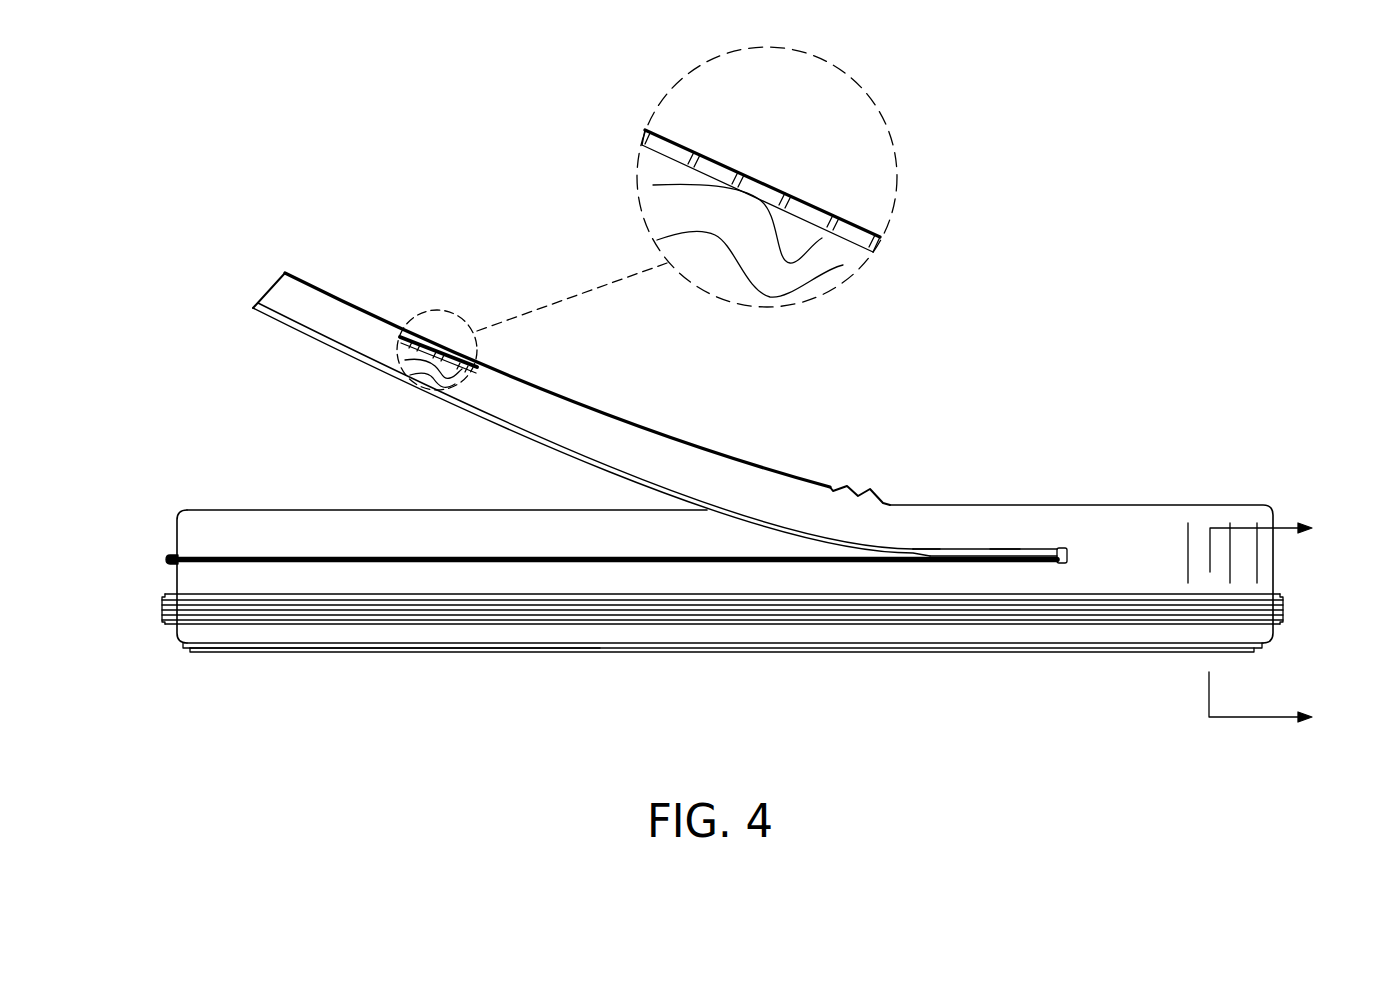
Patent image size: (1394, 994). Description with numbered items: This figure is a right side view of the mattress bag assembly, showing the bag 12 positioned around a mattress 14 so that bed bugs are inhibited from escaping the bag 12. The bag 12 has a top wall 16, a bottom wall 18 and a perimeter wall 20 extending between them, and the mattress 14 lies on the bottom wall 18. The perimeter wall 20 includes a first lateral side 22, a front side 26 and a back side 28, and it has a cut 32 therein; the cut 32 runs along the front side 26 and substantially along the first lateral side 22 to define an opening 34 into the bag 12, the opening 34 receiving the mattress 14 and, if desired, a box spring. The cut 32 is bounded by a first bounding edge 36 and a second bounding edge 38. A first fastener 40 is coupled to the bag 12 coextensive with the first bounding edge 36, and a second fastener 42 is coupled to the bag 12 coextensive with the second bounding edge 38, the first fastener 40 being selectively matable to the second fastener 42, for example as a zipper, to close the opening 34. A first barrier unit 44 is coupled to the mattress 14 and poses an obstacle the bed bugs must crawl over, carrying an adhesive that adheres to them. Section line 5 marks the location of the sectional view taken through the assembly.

The section line 5- 5 is at (1276, 626).
The bag 12 is at (283, 272).
The mattress 14 is at (225, 510).
The top wall 16 is at (623, 426).
The bottom wall 18 is at (432, 642).
The perimeter wall 20 is at (313, 575).
The first lateral side 22 is at (775, 575).
The front side 26 is at (172, 582).
The back side 28 is at (1273, 563).
The cut 32 is at (1003, 560).
The opening 34 is at (373, 460).
The first bounding edge 36 is at (973, 560).
The second bounding edge 38 is at (940, 553).
The first fastener 40 is at (858, 560).
The second fastener 42 is at (1003, 550).
The first barrier unit 44 is at (215, 627).